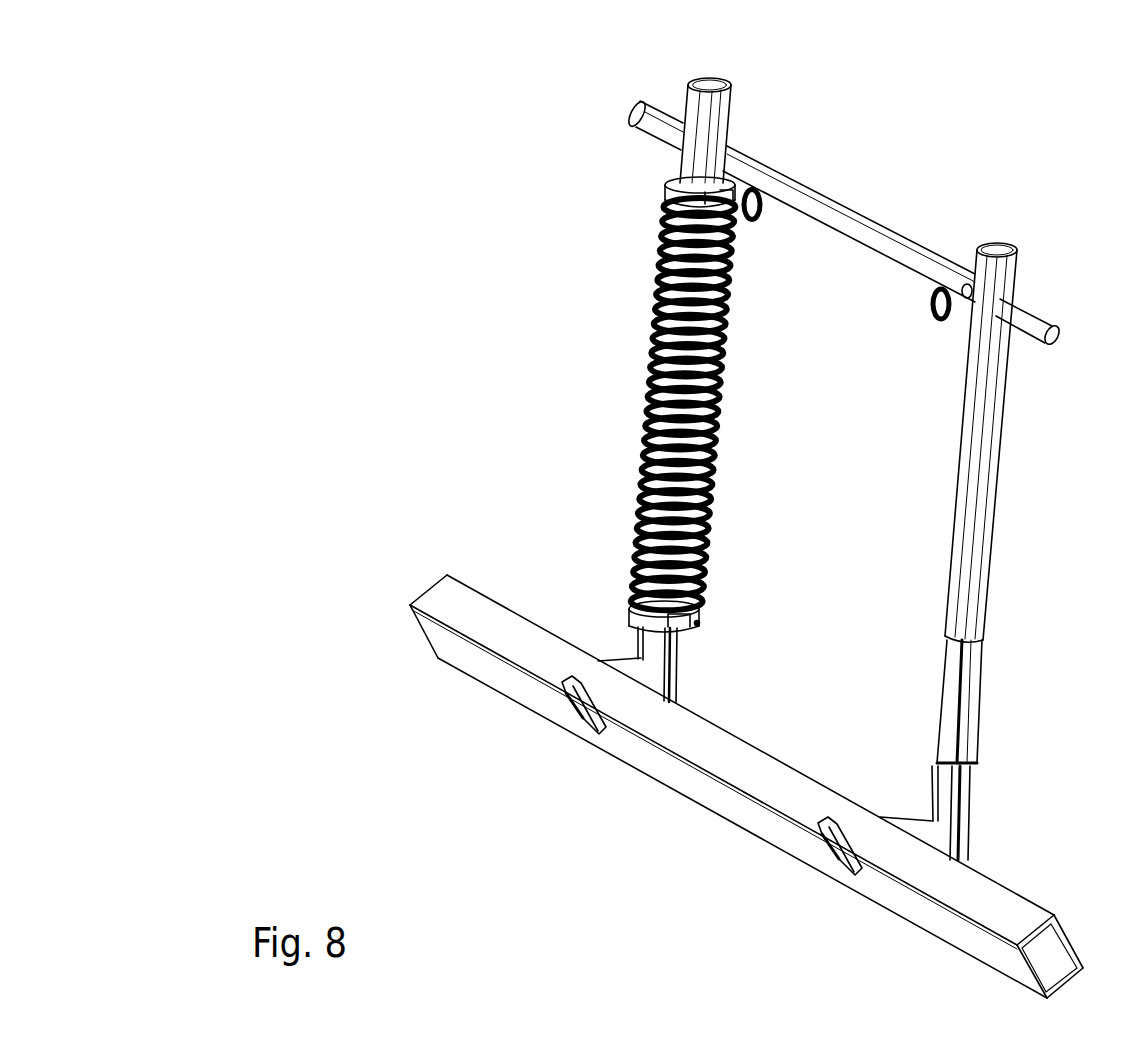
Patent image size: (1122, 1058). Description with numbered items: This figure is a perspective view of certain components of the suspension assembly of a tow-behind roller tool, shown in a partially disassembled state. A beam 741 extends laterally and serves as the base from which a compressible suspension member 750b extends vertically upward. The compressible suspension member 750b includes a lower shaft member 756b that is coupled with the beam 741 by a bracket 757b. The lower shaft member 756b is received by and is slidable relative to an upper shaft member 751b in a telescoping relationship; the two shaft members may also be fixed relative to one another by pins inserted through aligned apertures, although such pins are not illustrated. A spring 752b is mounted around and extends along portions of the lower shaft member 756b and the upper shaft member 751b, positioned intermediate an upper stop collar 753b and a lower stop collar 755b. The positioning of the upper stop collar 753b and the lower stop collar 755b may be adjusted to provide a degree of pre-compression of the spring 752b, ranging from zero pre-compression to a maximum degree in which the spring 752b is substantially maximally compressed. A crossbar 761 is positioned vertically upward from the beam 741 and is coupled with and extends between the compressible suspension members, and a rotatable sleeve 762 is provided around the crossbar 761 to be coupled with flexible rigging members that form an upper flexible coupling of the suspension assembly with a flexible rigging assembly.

The beam 741 is at (769, 778).
The compressible suspension member 750b is at (632, 404).
The upper shaft member 751b is at (683, 165).
The spring 752b is at (656, 318).
The upper stop collar 753b is at (668, 190).
The lower stop collar 755b is at (700, 622).
The lower shaft member 756b is at (975, 680).
The bracket 757b is at (683, 655).
The crossbar 761 is at (1040, 308).
The rotatable sleeve 762 is at (873, 214).